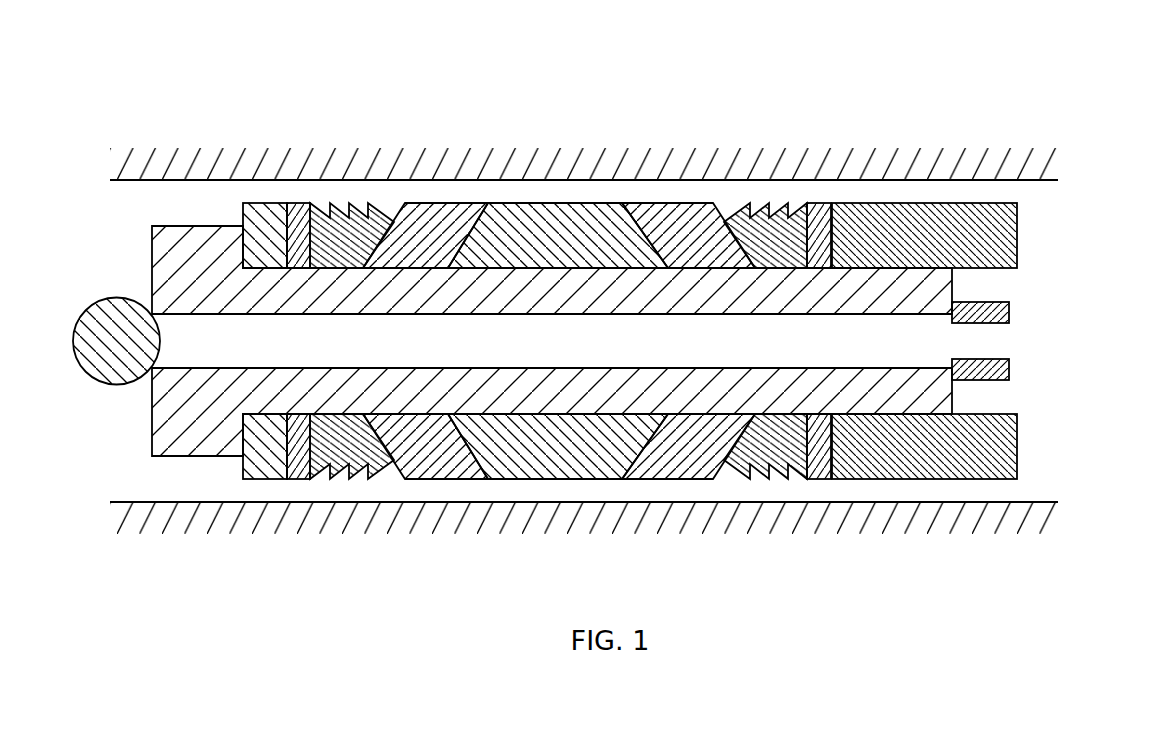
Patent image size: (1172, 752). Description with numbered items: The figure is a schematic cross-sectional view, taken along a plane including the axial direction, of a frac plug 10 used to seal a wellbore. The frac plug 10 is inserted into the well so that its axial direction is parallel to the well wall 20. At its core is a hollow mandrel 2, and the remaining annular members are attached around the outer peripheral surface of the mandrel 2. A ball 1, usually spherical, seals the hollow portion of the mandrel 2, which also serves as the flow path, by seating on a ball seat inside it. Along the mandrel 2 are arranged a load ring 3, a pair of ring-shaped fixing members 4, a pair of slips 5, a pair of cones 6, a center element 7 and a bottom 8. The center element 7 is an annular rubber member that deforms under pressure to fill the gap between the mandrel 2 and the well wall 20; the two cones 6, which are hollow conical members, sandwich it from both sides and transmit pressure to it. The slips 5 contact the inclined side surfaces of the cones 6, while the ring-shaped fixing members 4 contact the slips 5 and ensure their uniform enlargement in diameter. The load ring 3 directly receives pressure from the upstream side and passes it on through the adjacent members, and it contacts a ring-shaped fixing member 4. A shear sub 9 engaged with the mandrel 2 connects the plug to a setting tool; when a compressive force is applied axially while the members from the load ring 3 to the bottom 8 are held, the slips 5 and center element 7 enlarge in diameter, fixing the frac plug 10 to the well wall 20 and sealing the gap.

The ball 1 is at (113, 305).
The mandrel 2 is at (200, 235).
The load ring 3 is at (270, 215).
The ring-shaped fixing member 4 is at (822, 218).
The slip 5 is at (342, 458).
The cone 6 is at (437, 462).
The center element 7 is at (562, 222).
The bottom 8 is at (923, 218).
The shear sub 9 is at (1005, 368).
The frac plug 10 is at (1095, 176).
The well wall 20 is at (1028, 177).